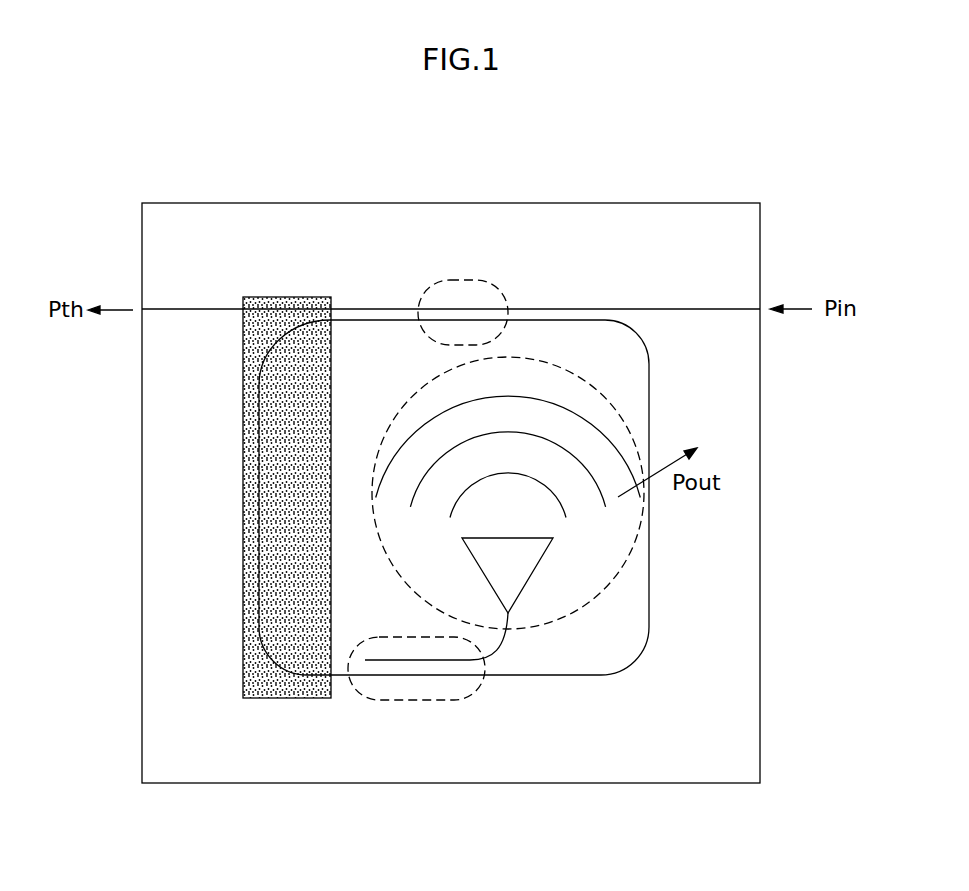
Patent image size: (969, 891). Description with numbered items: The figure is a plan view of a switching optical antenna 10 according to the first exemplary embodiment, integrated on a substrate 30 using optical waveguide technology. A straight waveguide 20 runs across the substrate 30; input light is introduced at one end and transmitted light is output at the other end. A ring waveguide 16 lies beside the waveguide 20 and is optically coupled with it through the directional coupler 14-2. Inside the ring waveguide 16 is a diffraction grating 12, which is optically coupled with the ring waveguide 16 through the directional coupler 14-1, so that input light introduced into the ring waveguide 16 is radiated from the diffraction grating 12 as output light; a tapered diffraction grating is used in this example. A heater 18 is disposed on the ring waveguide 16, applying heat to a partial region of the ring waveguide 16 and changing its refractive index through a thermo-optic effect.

The switching optical antenna 10 is at (445, 178).
The diffraction grating 12 is at (605, 398).
The directional coupler 14-1 is at (416, 702).
The directional coupler 14-2 is at (468, 280).
The ring waveguide 16 is at (643, 345).
The heater 18 is at (285, 700).
The waveguide 20 is at (188, 308).
The substrate 30 is at (527, 784).